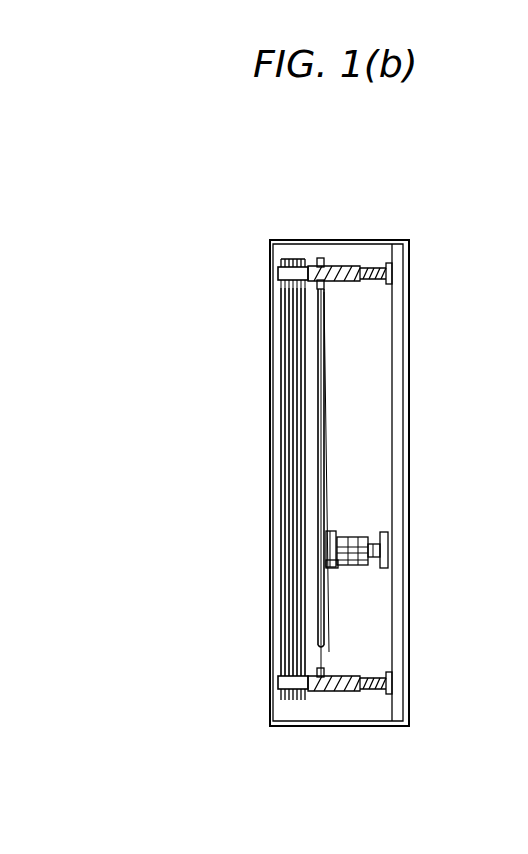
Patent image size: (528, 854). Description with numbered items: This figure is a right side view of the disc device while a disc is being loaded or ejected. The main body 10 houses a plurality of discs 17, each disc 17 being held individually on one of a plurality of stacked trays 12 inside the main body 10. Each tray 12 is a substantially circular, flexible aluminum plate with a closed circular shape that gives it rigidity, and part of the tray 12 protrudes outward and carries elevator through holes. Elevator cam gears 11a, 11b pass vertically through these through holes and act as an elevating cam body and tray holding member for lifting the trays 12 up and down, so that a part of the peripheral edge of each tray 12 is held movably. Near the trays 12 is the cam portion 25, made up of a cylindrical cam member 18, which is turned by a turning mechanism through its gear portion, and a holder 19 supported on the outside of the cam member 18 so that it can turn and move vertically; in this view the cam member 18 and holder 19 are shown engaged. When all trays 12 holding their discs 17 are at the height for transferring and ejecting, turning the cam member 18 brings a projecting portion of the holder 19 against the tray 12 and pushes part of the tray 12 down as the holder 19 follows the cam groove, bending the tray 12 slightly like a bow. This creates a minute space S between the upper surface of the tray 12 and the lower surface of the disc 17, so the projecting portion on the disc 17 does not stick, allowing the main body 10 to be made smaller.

The main body 10 is at (350, 241).
The elevator cam gear 11a is at (378, 262).
The elevator cam gear 11b is at (364, 688).
The tray 12 is at (292, 252).
The disc 17 is at (322, 402).
The cam member 18 is at (375, 562).
The holder 19 is at (348, 566).
The cam portion 25 is at (363, 531).
The space S is at (347, 529).